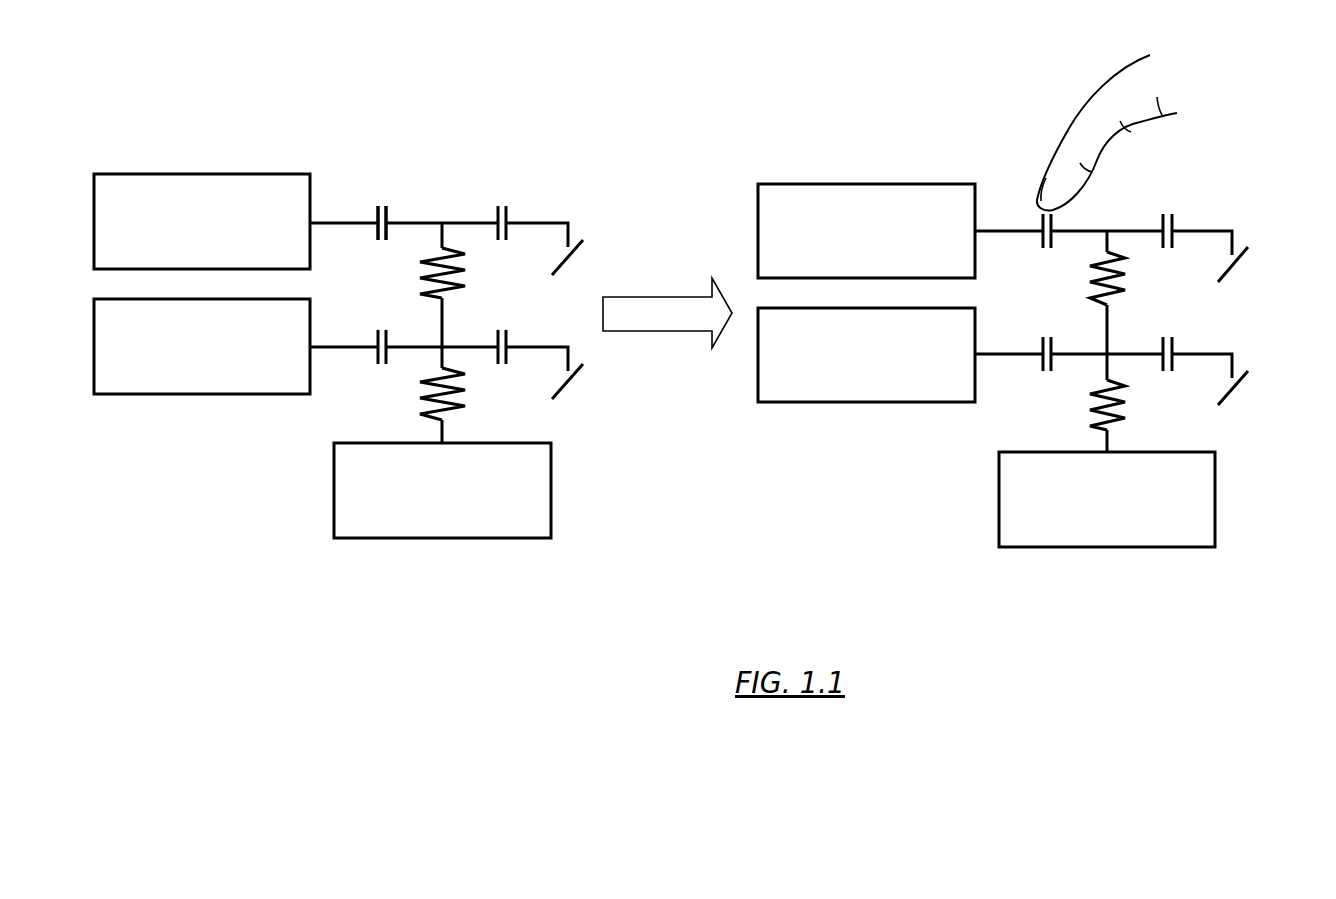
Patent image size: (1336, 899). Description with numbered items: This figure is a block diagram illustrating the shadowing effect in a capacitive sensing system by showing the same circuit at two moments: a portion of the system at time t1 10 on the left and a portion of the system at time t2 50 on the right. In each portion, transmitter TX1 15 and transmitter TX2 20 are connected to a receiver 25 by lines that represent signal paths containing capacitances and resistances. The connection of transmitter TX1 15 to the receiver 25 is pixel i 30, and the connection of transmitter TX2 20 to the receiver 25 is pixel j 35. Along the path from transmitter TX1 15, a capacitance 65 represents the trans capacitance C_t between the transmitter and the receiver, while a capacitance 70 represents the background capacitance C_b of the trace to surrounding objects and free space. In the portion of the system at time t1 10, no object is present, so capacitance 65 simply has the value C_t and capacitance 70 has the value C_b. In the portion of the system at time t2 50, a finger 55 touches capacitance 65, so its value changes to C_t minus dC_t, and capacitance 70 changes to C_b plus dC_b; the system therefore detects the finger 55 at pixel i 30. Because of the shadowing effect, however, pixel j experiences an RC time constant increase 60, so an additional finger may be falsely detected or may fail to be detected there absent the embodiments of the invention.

The portion of the system at time t1 10 is at (339, 416).
The transmitter TX1 15 is at (534, 226).
The transmitter TX2 20 is at (534, 350).
The receiver 25 is at (774, 495).
The pixel i 30 is at (833, 209).
The pixel j 35 is at (501, 360).
The portion of the system at time t2 50 is at (921, 239).
The finger 55 is at (1181, 128).
The RC time constant increase at pixel j 60 is at (860, 404).
The capacitance C_t 65 is at (689, 198).
The capacitance C_b 70 is at (530, 225).